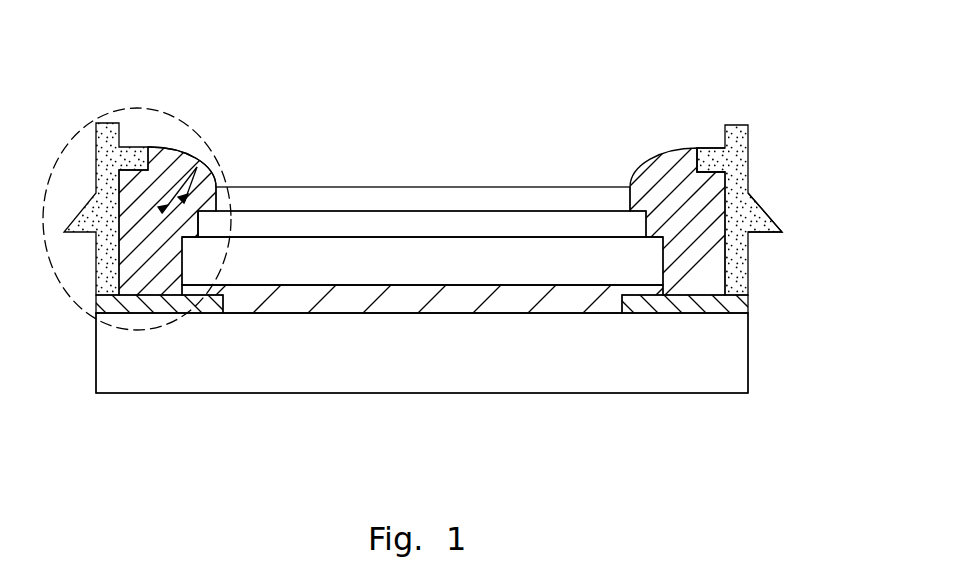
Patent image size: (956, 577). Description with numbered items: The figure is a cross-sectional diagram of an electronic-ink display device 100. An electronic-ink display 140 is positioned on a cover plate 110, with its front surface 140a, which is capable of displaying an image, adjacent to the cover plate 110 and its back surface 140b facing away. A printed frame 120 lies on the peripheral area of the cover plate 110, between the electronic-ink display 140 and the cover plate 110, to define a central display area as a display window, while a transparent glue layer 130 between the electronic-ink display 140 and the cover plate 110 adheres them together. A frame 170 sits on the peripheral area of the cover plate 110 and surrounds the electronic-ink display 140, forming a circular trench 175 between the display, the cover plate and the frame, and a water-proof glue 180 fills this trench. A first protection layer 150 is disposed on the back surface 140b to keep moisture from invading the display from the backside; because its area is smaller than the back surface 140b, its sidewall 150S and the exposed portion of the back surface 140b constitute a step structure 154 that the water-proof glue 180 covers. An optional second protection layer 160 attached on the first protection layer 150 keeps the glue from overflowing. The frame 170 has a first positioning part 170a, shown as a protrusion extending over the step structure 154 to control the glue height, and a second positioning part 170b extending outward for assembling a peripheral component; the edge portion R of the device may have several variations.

The electronic-ink display device 100 is at (117, 51).
The edge portion R is at (77, 138).
The cover plate 110 is at (737, 352).
The printed frame 120 is at (745, 303).
The transparent glue layer 130 is at (553, 302).
The electronic-ink display 140 is at (420, 263).
The front surface 140a is at (500, 288).
The back surface 140b is at (547, 237).
The first protection layer 150 is at (477, 223).
The sidewall 150S is at (208, 218).
The step structure 154 is at (207, 170).
The second protection layer 160 is at (417, 198).
The frame 170 is at (738, 145).
The first positioning part 170a is at (710, 152).
The second positioning part 170b is at (753, 218).
The circular trench 175 is at (197, 167).
The water-proof glue 180 is at (662, 172).